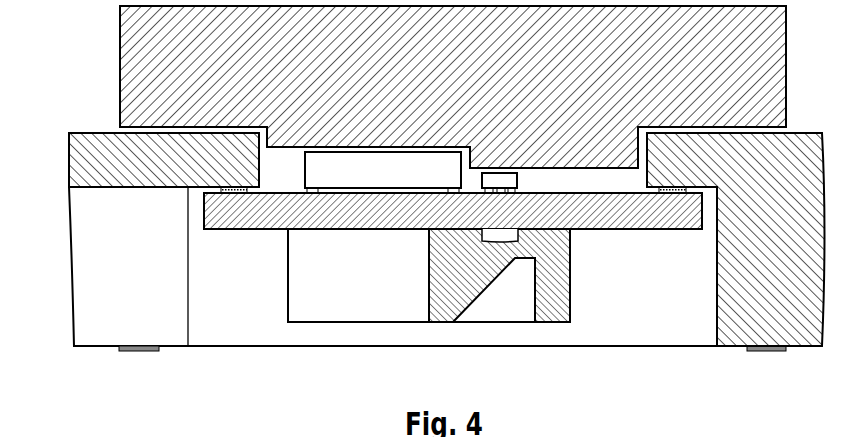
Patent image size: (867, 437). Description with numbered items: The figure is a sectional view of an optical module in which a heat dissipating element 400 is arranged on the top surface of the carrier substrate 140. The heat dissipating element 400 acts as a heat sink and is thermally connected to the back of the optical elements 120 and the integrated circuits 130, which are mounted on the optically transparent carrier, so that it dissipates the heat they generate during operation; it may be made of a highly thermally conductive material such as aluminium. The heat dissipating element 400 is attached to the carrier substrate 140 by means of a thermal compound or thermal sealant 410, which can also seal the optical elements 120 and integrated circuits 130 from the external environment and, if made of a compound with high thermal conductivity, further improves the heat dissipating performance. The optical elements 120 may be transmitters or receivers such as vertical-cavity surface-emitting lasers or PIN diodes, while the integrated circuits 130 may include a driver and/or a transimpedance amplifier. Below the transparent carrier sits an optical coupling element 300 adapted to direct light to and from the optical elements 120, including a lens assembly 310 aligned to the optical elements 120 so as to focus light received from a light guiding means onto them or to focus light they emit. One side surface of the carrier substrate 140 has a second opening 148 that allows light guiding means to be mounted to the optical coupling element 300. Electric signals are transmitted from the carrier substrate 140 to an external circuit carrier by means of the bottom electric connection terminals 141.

The heat dissipating element 400 is at (124, 44).
The thermal sealant 410 is at (122, 132).
The optical element 120 is at (490, 182).
The integrated circuit 130 is at (345, 175).
The optical coupling element 300 is at (288, 298).
The lens assembly 310 is at (568, 278).
The second opening 148 is at (169, 336).
The carrier substrate 140 is at (732, 337).
The bottom electric connection terminal 141 is at (767, 352).